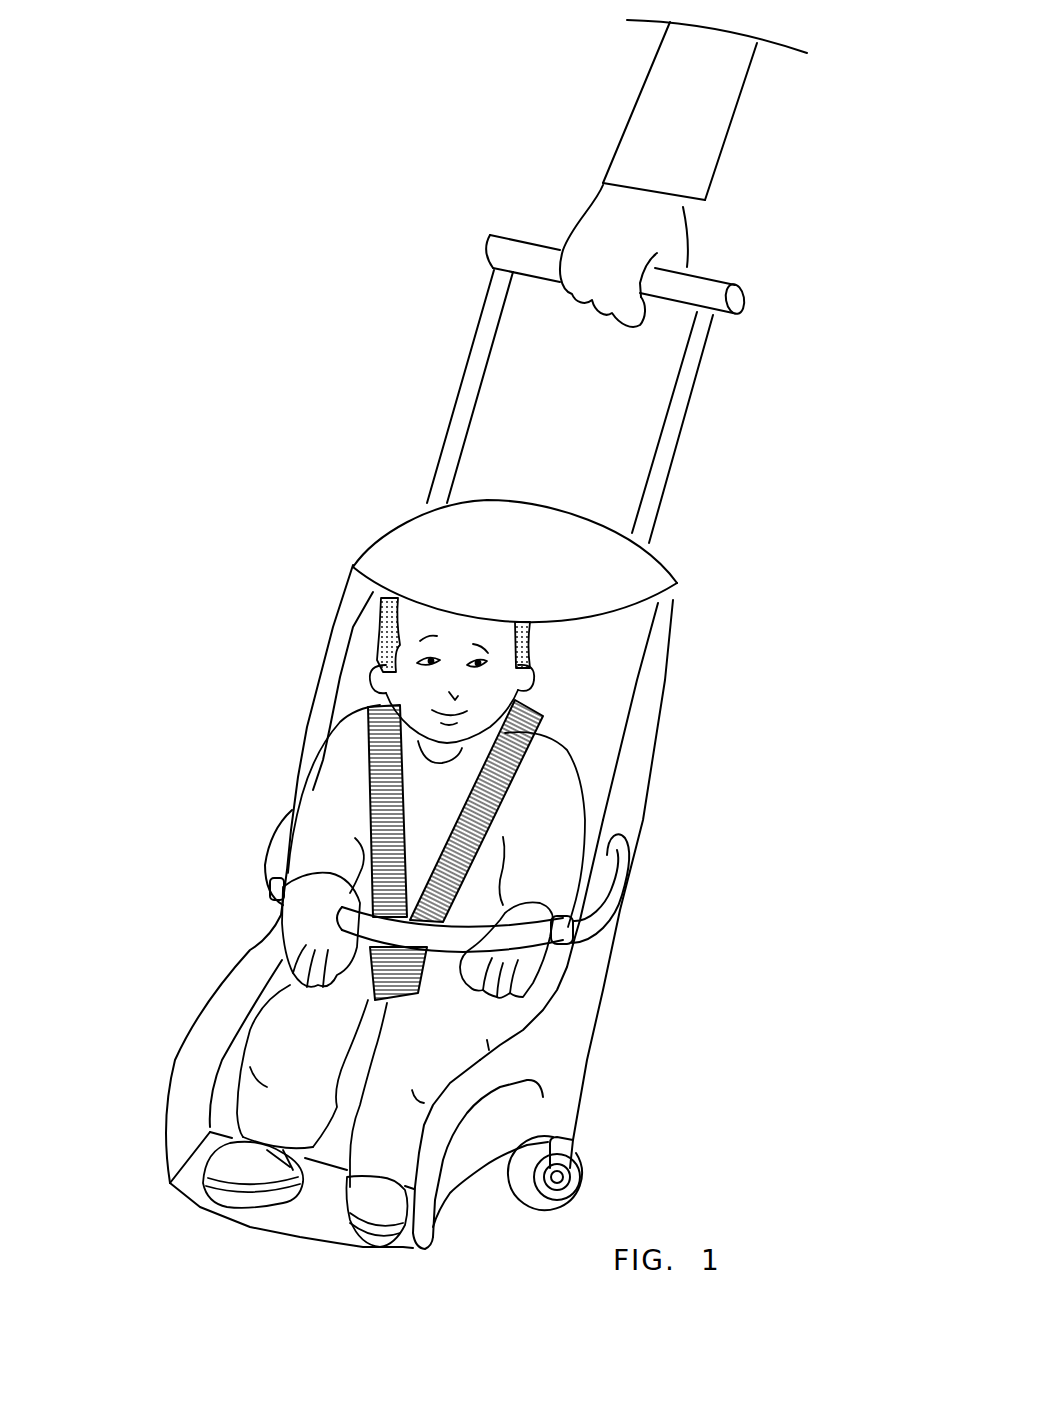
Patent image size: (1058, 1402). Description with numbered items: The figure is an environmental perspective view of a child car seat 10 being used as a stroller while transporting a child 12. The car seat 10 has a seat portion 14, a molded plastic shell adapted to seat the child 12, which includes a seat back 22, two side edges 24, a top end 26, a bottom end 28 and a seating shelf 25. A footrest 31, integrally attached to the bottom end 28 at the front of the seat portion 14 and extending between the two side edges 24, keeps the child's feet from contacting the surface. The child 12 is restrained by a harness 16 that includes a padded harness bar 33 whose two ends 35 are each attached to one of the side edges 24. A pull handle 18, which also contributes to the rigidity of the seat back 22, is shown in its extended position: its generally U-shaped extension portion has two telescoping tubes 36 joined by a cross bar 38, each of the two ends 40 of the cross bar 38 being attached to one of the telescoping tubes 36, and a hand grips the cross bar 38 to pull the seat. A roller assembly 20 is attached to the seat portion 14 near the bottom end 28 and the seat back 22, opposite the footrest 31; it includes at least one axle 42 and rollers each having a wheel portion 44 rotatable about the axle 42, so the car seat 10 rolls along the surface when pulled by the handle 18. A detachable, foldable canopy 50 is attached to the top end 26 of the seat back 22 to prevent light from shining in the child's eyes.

The child car seat 10 is at (707, 652).
The child 12 is at (529, 822).
The seat portion 14 is at (600, 1030).
The harness 16 is at (370, 779).
The pull handle 18 is at (717, 340).
The roller assembly 20 is at (572, 1142).
The seat back 22 is at (564, 679).
The side edges 24 is at (237, 975).
The seating shelf 25 is at (370, 1032).
The top end 26 is at (560, 498).
The bottom end 28 is at (483, 1167).
The footrest 31 is at (270, 1218).
The harness bar 33 is at (603, 937).
The ends 35 is at (268, 848).
The telescoping tubes 36 is at (467, 380).
The cross bar 38 is at (543, 253).
The ends 40 is at (487, 253).
The axle 42 is at (560, 1173).
The wheel portion 44 is at (525, 1203).
The canopy 50 is at (480, 570).